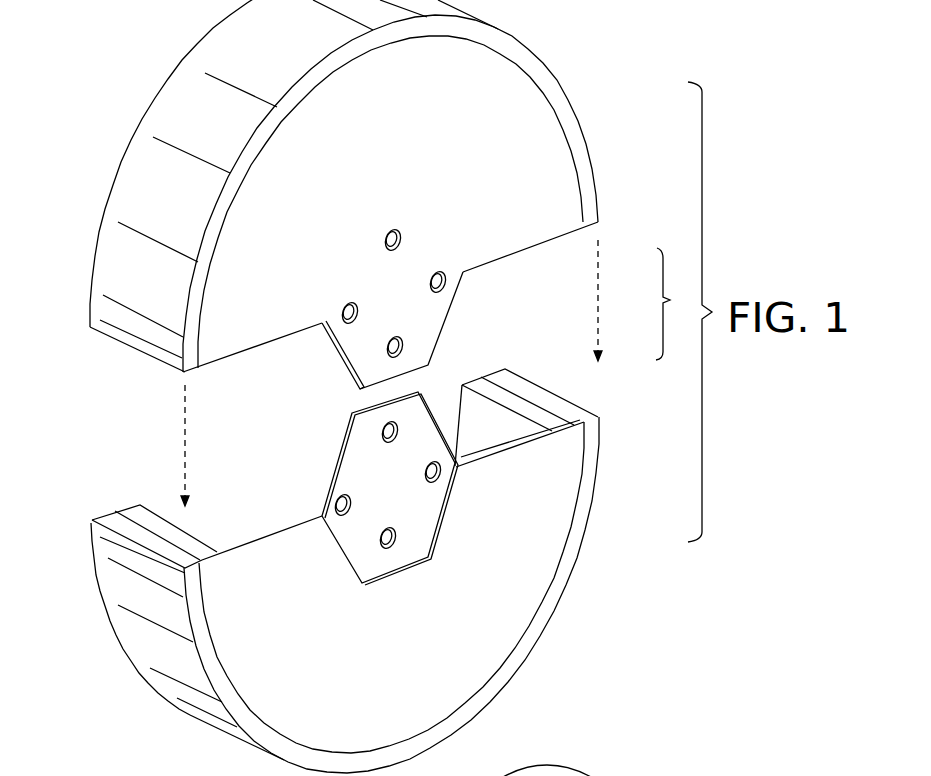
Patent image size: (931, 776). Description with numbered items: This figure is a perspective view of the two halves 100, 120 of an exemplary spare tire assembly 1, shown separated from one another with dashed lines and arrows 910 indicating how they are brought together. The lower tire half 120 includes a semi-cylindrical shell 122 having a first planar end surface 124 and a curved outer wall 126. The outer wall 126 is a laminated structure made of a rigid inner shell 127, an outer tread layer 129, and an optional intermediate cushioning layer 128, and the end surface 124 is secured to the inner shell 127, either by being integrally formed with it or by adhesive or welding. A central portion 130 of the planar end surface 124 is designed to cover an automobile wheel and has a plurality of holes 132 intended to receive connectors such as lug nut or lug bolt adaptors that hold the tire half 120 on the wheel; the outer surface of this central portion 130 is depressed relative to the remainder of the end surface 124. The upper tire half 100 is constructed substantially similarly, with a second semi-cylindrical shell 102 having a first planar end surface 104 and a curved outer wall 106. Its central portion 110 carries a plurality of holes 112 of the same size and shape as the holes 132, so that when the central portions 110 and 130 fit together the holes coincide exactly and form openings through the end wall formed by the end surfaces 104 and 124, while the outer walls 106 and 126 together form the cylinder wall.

The spare tire assembly 1 is at (675, 304).
The tire half 100 is at (616, 218).
The second semi-cylindrical shell 102 is at (268, 347).
The first planar end surface 104 is at (505, 236).
The curved outer wall 106 is at (167, 100).
The central portion 110 is at (363, 343).
The holes 112 is at (439, 271).
The tire half 120 is at (607, 403).
The semi-cylindrical shell 122 is at (487, 443).
The first planar end surface 124 is at (513, 592).
The curved outer wall 126 is at (168, 692).
The rigid inner shell 127 is at (128, 506).
The intermediate cushioning layer 128 is at (110, 509).
The outer tread layer 129 is at (97, 517).
The central portion 130 is at (433, 408).
The holes 132 is at (384, 430).
The assembly direction 910 is at (391, 373).